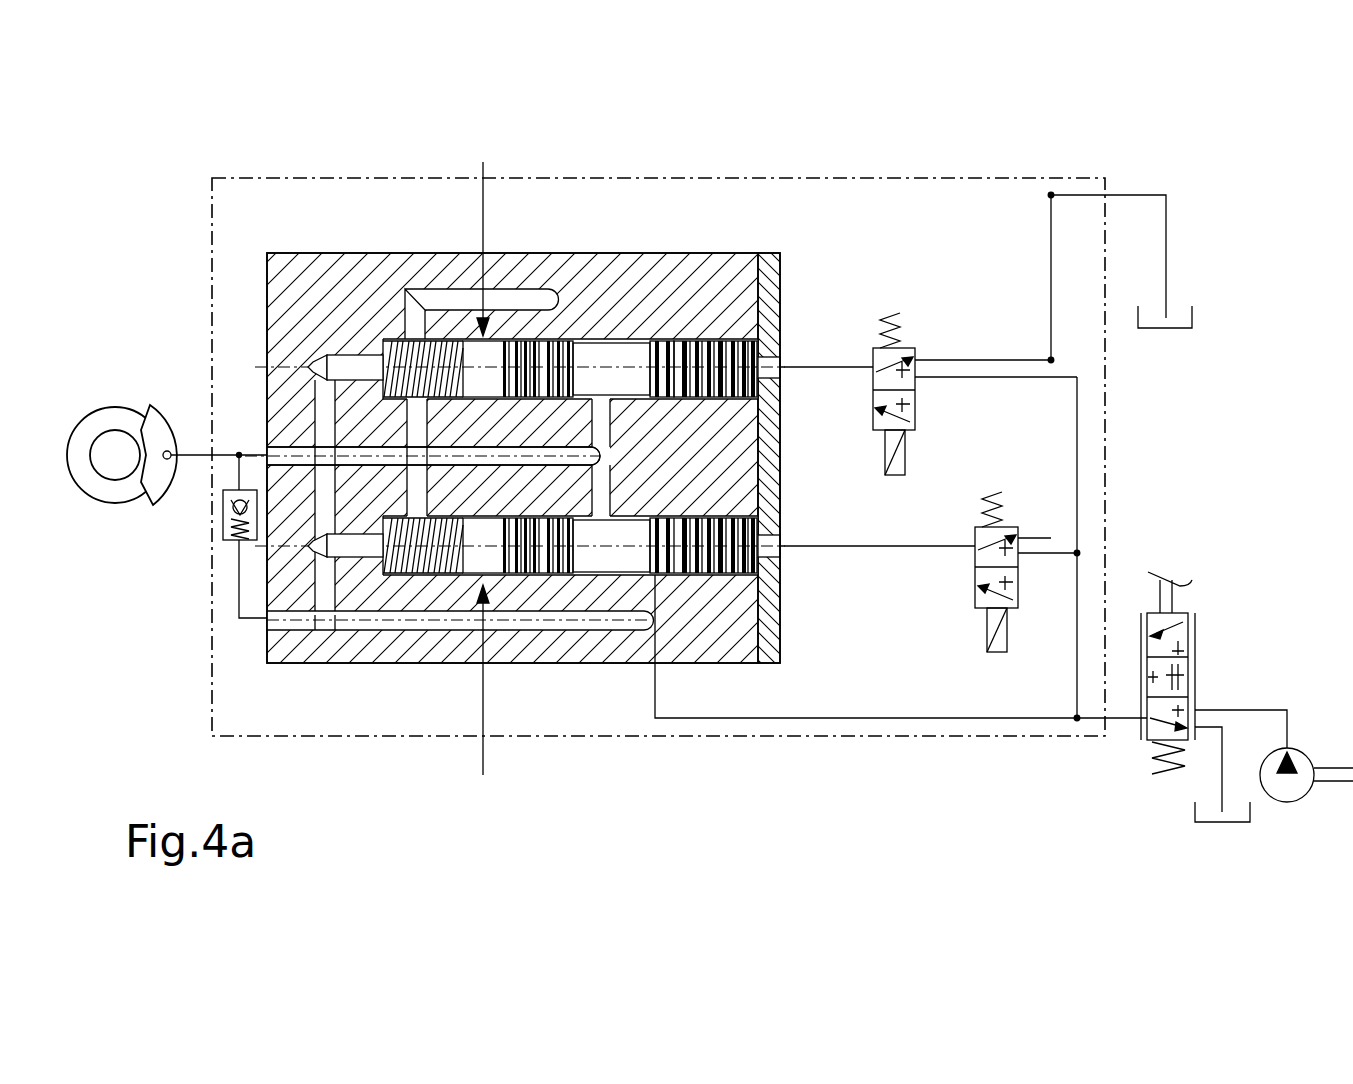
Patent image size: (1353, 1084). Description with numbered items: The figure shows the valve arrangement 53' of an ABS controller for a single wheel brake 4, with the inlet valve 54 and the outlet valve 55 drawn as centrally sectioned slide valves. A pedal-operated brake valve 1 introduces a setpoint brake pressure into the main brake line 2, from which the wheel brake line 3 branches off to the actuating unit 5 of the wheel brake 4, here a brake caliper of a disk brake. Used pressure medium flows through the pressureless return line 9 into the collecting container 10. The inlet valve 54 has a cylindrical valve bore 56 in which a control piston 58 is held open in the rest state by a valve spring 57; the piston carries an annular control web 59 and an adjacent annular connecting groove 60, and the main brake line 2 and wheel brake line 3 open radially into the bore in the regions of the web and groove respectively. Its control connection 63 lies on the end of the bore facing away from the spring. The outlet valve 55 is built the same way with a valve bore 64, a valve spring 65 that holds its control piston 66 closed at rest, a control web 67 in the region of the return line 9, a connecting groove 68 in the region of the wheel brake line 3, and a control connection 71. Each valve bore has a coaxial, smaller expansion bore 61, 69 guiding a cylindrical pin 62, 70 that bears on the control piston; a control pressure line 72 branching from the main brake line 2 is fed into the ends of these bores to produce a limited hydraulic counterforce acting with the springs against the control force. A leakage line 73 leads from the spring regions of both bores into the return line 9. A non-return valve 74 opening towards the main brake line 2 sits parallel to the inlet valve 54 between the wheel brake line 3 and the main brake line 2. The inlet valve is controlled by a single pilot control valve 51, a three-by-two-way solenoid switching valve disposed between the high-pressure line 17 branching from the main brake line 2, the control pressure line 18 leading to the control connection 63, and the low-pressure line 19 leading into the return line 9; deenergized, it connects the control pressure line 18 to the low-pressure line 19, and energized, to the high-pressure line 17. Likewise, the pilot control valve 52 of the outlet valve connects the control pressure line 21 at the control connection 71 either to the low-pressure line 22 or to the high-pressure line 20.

The brake valve 1 is at (1222, 668).
The main brake line 2 is at (903, 720).
The wheel brake line 3 is at (197, 462).
The wheel brake 4 is at (92, 520).
The actuating unit 5 is at (157, 487).
The return line 9 is at (1166, 268).
The collecting container 10 is at (1192, 313).
The high-pressure line 17 is at (1051, 556).
The control pressure line 18 is at (874, 548).
The low-pressure line 19 is at (1077, 415).
The high-pressure line 20 is at (1031, 379).
The control pressure line 21 is at (837, 369).
The low-pressure line 22 is at (982, 360).
The pilot control valve 51 is at (975, 575).
The pilot control valve 52 is at (915, 394).
The valve arrangement 53' is at (723, 457).
The inlet valve 54 is at (483, 699).
The outlet valve 55 is at (482, 233).
The valve bore 56 is at (586, 575).
The valve spring 57 is at (418, 575).
The control piston 58 is at (708, 560).
The control web 59 is at (656, 580).
The connecting groove 60 is at (613, 560).
The expansion bore 61 is at (323, 557).
The cylindrical pin 62 is at (367, 557).
The control connection 63 is at (784, 546).
The valve bore 64 is at (640, 338).
The valve spring 65 is at (388, 345).
The control piston 66 is at (712, 350).
The control web 67 is at (573, 345).
The connecting groove 68 is at (605, 352).
The expansion bore 69 is at (318, 360).
The cylindrical pin 70 is at (352, 355).
The control connection 71 is at (790, 362).
The control pressure line 72 is at (325, 413).
The leakage line 73 is at (445, 300).
The non-return valve 74 is at (232, 540).